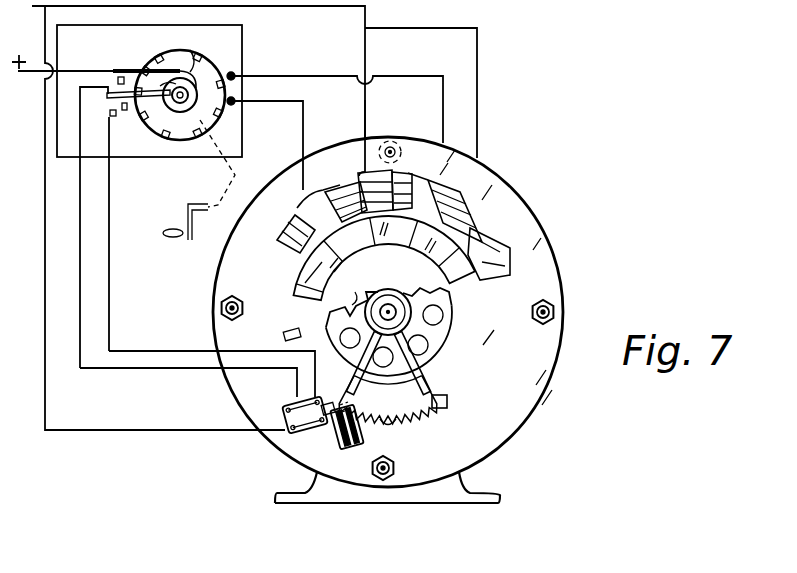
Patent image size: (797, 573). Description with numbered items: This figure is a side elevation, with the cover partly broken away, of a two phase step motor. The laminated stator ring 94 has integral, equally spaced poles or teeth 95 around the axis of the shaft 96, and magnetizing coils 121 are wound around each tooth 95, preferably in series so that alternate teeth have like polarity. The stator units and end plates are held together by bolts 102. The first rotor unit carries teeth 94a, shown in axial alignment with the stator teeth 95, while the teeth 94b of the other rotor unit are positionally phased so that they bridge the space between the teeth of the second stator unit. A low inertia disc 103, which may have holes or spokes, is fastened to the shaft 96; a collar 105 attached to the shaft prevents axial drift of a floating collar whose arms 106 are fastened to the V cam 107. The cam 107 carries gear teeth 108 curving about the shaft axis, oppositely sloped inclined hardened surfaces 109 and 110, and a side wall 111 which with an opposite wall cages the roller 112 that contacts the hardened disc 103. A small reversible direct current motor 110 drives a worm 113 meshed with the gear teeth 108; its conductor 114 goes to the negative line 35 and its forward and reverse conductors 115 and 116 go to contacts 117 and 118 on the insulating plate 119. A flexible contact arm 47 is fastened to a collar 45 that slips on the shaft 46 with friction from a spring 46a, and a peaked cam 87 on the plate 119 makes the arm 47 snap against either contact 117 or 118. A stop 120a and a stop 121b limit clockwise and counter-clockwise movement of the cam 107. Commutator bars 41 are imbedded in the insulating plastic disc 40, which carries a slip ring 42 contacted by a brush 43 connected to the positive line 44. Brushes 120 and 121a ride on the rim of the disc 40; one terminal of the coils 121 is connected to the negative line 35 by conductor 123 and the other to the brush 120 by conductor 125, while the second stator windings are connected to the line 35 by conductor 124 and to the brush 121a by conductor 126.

The negative line 35 is at (292, 12).
The insulating plastic disc 40 is at (145, 133).
The commutator bars 41 is at (160, 50).
The slip ring 42 is at (190, 50).
The brush 43 is at (120, 68).
The positive line 44 is at (36, 72).
The collar 45 is at (172, 110).
The shaft 46 is at (186, 92).
The spring 46a is at (159, 89).
The contact arm 47 is at (112, 100).
The peaked cam 87 is at (125, 112).
The laminated stator ring 94 is at (272, 181).
The rotor teeth 94a is at (385, 258).
The rotor teeth 94b is at (328, 271).
The stator poles or teeth 95 is at (290, 228).
The shaft 96 is at (356, 294).
The bolts 102 is at (218, 308).
The disc 103 is at (440, 338).
The collar 105 is at (388, 320).
The arms 106 is at (432, 344).
The V cam 107 is at (420, 414).
The gear teeth 108 is at (388, 420).
The inclined hardened surface 109 is at (346, 392).
The small direct current motor 110 is at (288, 405).
The side wall 111 is at (420, 388).
The roller 112 is at (356, 392).
The worm 113 is at (348, 446).
The conductor 114 is at (165, 431).
The forward conductor 115 is at (138, 368).
The reverse conductor 116 is at (183, 350).
The contact 117 is at (106, 95).
The contact 118 is at (112, 116).
The insulating plate 119 is at (186, 162).
The brush 120 is at (231, 108).
The stop 120a is at (275, 328).
The magnetizing coils 121 is at (330, 188).
The brush 121a is at (231, 70).
The stop 121b is at (449, 398).
The conductor 123 is at (369, 110).
The conductor 124 is at (480, 90).
The conductor 125 is at (312, 130).
The conductor 126 is at (324, 75).